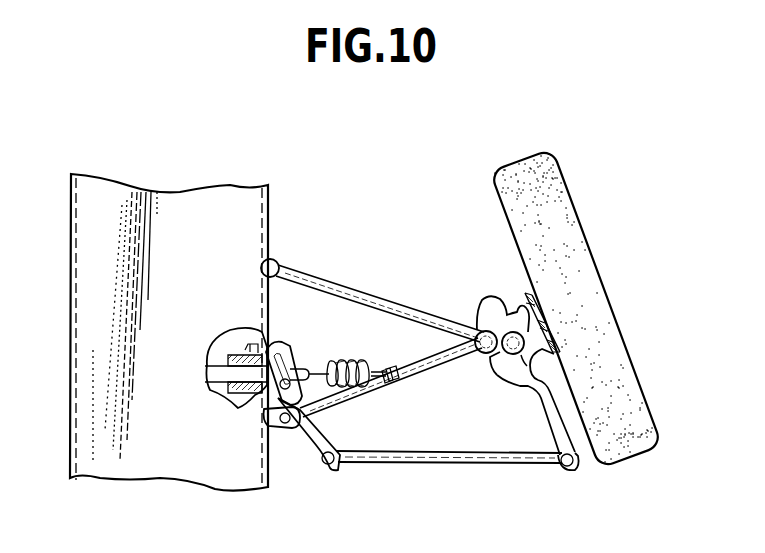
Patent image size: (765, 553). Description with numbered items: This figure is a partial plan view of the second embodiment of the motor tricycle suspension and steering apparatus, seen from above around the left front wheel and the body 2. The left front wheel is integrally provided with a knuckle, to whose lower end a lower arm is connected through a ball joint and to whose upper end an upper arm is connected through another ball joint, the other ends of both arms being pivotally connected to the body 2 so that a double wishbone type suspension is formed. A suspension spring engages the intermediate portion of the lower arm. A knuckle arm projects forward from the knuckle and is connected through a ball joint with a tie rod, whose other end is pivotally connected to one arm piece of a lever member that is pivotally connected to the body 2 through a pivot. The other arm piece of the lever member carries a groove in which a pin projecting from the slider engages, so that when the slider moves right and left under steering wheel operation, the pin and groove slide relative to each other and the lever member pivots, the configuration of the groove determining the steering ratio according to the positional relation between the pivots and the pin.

The body 2 is at (200, 196).